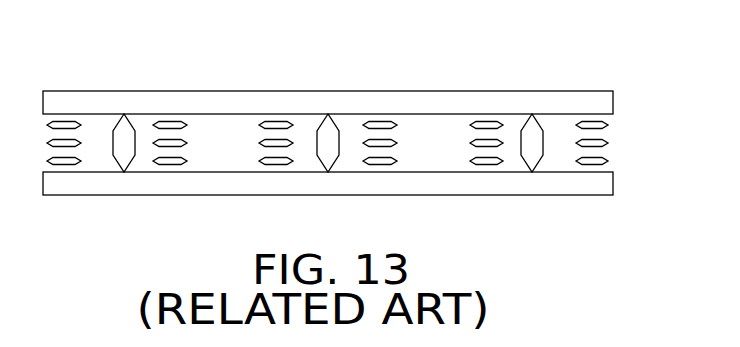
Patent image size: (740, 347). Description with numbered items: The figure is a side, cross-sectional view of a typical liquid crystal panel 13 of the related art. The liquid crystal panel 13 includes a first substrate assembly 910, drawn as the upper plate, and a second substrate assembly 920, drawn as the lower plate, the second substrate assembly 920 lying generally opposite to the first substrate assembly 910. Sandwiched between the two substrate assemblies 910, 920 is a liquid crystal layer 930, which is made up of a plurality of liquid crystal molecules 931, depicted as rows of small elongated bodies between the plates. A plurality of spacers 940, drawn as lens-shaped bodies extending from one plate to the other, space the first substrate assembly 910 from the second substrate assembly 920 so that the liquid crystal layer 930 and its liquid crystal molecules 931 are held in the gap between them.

The liquid crystal panel 13 is at (309, 54).
The first substrate assembly 910 is at (586, 100).
The second substrate assembly 920 is at (587, 187).
The liquid crystal layer 930 is at (613, 114).
The liquid crystal molecules 931 is at (483, 125).
The spacers 940 is at (536, 138).